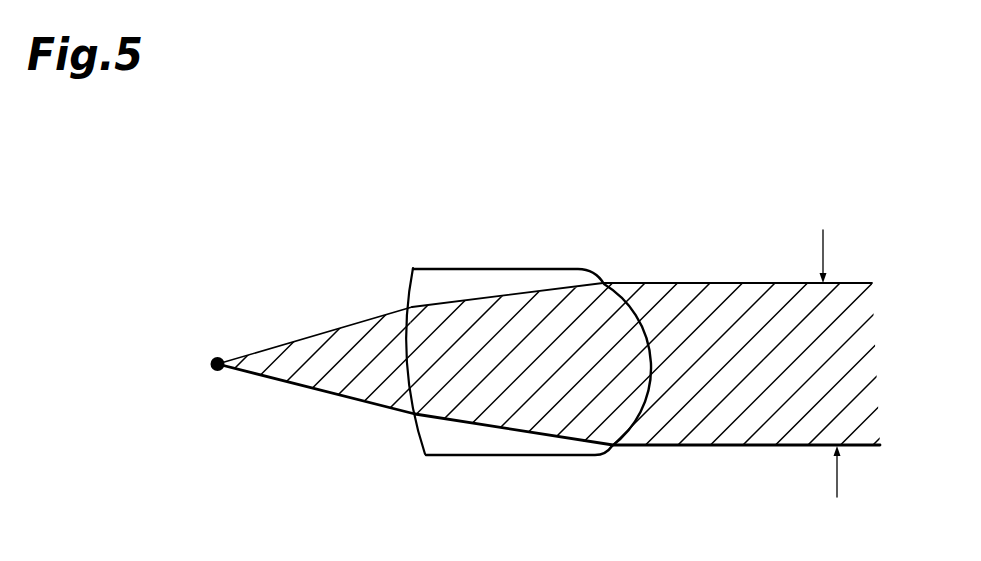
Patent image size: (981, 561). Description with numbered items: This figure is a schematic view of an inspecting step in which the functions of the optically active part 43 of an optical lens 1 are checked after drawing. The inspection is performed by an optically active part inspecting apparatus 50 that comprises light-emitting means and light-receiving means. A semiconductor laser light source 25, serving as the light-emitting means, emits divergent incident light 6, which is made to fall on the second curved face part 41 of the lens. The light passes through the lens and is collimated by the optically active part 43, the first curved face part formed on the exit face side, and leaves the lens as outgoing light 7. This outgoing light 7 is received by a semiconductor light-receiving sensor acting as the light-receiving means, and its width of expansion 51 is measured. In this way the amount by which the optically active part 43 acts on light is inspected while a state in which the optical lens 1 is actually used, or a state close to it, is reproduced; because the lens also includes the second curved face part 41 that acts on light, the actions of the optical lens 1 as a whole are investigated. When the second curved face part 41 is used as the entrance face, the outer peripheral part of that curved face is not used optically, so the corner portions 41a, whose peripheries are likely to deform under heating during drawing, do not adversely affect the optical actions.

The optical lens 1 is at (575, 236).
The second curved face part 41 is at (410, 283).
The corner portions 41a is at (413, 268).
The optically active part 43 is at (645, 414).
The optically active part inspecting apparatus 50 is at (871, 215).
The outgoing light 7 is at (764, 447).
The width of expansion 51 is at (838, 485).
The semiconductor laser light source 25 is at (218, 356).
The incident light 6 is at (312, 382).